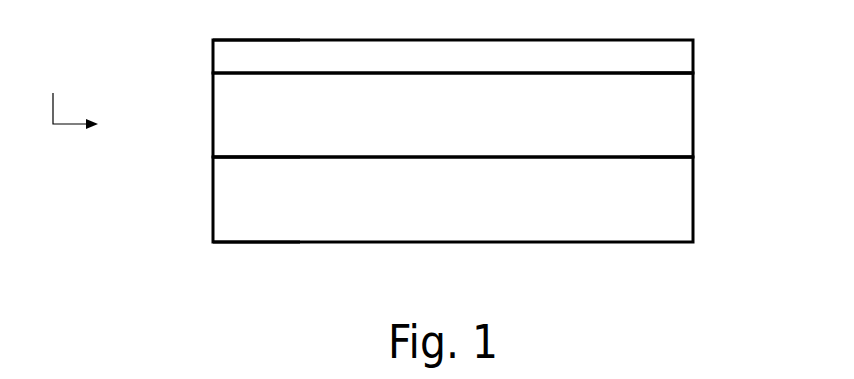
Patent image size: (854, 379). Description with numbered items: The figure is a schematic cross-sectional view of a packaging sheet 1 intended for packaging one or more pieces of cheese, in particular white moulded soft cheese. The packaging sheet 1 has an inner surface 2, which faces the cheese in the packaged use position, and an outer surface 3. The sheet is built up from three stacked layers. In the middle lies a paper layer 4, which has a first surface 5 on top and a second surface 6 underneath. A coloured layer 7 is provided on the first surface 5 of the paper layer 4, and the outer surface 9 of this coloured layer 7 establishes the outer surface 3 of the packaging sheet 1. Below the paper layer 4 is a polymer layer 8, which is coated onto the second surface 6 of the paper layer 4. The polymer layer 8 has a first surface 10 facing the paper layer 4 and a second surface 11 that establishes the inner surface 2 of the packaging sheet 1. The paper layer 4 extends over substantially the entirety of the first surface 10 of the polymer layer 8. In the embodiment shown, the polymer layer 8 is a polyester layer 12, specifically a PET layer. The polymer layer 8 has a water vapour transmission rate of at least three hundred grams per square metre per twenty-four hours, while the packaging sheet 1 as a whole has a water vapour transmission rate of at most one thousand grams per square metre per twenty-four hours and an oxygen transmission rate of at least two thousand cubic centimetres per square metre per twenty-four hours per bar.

The packaging sheet 1 is at (73, 98).
The inner surface 2 is at (430, 245).
The outer surface 3 is at (423, 38).
The paper layer 4 is at (465, 119).
The first surface 5 is at (677, 71).
The second surface 6 is at (677, 159).
The coloured layer 7 is at (467, 65).
The polymer layer 8 is at (557, 210).
The outer surface of the coloured layer 9 is at (233, 38).
The first surface 10 is at (230, 156).
The second surface 11 is at (222, 243).
The polyester layer 12 is at (351, 209).